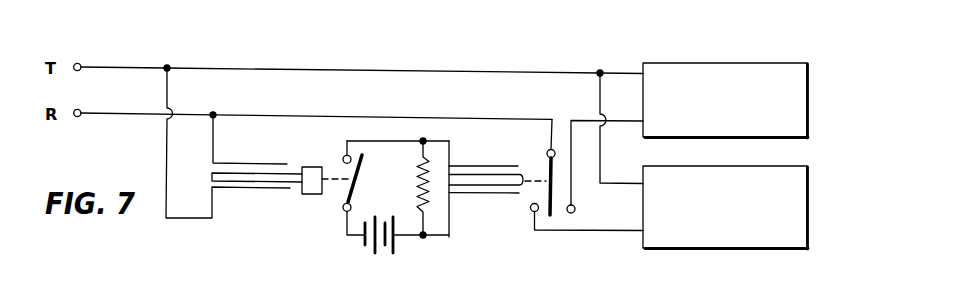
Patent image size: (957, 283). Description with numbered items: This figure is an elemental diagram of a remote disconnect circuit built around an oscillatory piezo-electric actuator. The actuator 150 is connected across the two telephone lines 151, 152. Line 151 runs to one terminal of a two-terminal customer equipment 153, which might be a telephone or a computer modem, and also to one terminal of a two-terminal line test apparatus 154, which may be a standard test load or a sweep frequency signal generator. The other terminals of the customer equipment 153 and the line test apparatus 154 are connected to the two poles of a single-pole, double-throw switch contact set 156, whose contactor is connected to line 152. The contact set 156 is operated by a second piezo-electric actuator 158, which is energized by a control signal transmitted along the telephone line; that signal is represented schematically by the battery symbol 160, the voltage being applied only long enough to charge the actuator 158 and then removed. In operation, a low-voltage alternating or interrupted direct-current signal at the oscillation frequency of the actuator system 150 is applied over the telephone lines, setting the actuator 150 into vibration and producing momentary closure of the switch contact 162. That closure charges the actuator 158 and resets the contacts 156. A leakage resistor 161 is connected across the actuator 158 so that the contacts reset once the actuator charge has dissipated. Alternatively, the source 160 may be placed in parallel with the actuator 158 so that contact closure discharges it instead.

The actuator 150 is at (262, 189).
The telephone line 151 is at (127, 67).
The telephone line 152 is at (128, 114).
The customer equipment 153 is at (812, 108).
The line test apparatus 154 is at (810, 212).
The switch contact set 156 is at (600, 240).
The piezo-electric actuator 158 is at (490, 206).
The battery symbol 160 is at (395, 242).
The leakage resistor 161 is at (417, 198).
The switch contact 162 is at (351, 172).